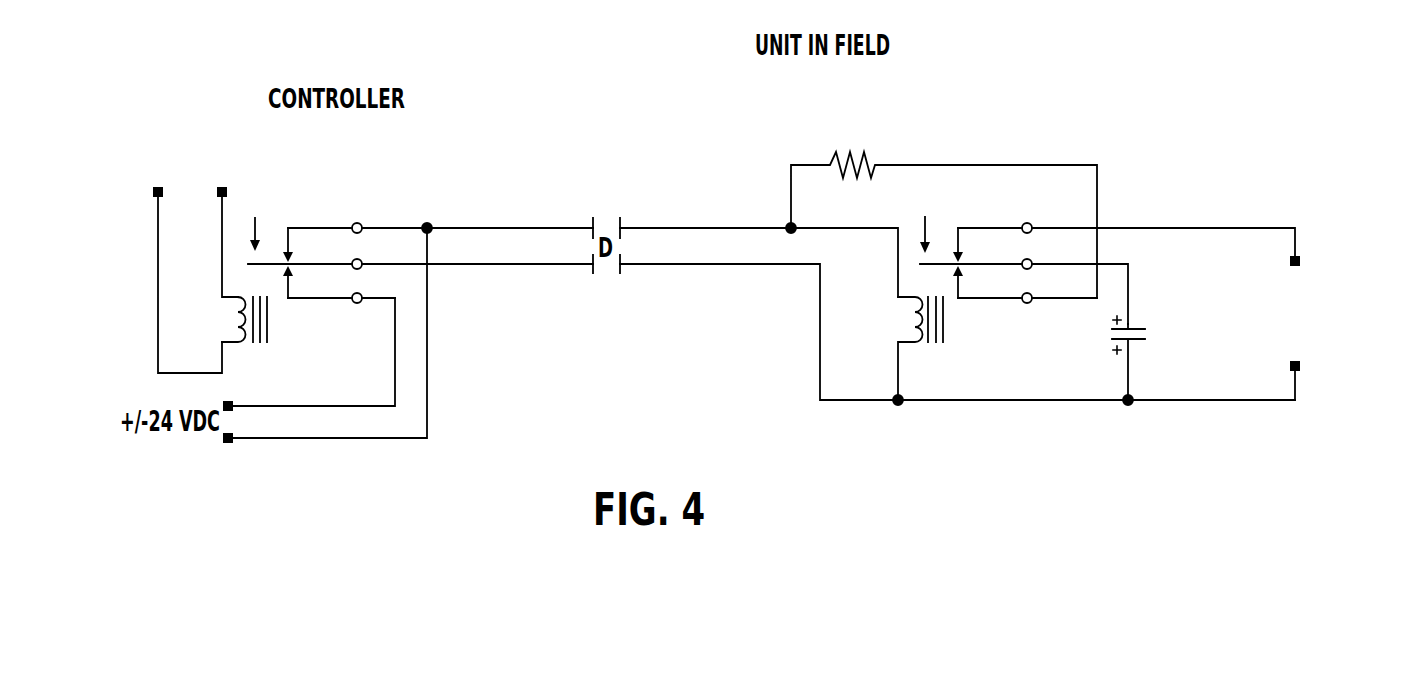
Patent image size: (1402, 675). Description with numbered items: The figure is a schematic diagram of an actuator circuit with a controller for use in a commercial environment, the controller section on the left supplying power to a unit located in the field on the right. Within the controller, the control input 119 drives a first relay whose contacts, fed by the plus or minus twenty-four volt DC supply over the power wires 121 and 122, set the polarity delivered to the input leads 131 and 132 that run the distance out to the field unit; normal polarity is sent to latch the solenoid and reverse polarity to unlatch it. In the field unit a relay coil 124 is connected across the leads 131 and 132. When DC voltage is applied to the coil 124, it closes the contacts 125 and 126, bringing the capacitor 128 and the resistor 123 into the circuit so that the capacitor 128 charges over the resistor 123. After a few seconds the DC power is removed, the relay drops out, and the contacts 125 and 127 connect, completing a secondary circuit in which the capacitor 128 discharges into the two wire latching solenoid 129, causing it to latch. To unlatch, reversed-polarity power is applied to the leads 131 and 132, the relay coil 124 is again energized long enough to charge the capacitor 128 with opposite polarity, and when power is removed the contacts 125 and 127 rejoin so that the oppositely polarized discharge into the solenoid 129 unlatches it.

The control input terminals 119 is at (207, 259).
The power supply wire 121 is at (323, 405).
The power supply wire 122 is at (330, 440).
The resistor 123 is at (944, 198).
The relay coil 124 is at (892, 351).
The contact 125 is at (1035, 260).
The contact 126 is at (1027, 304).
The contact 127 is at (1035, 224).
The capacitor 128 is at (1106, 360).
The latching solenoid 129 is at (1315, 328).
The input lead 131 is at (712, 265).
The input lead 132 is at (735, 222).